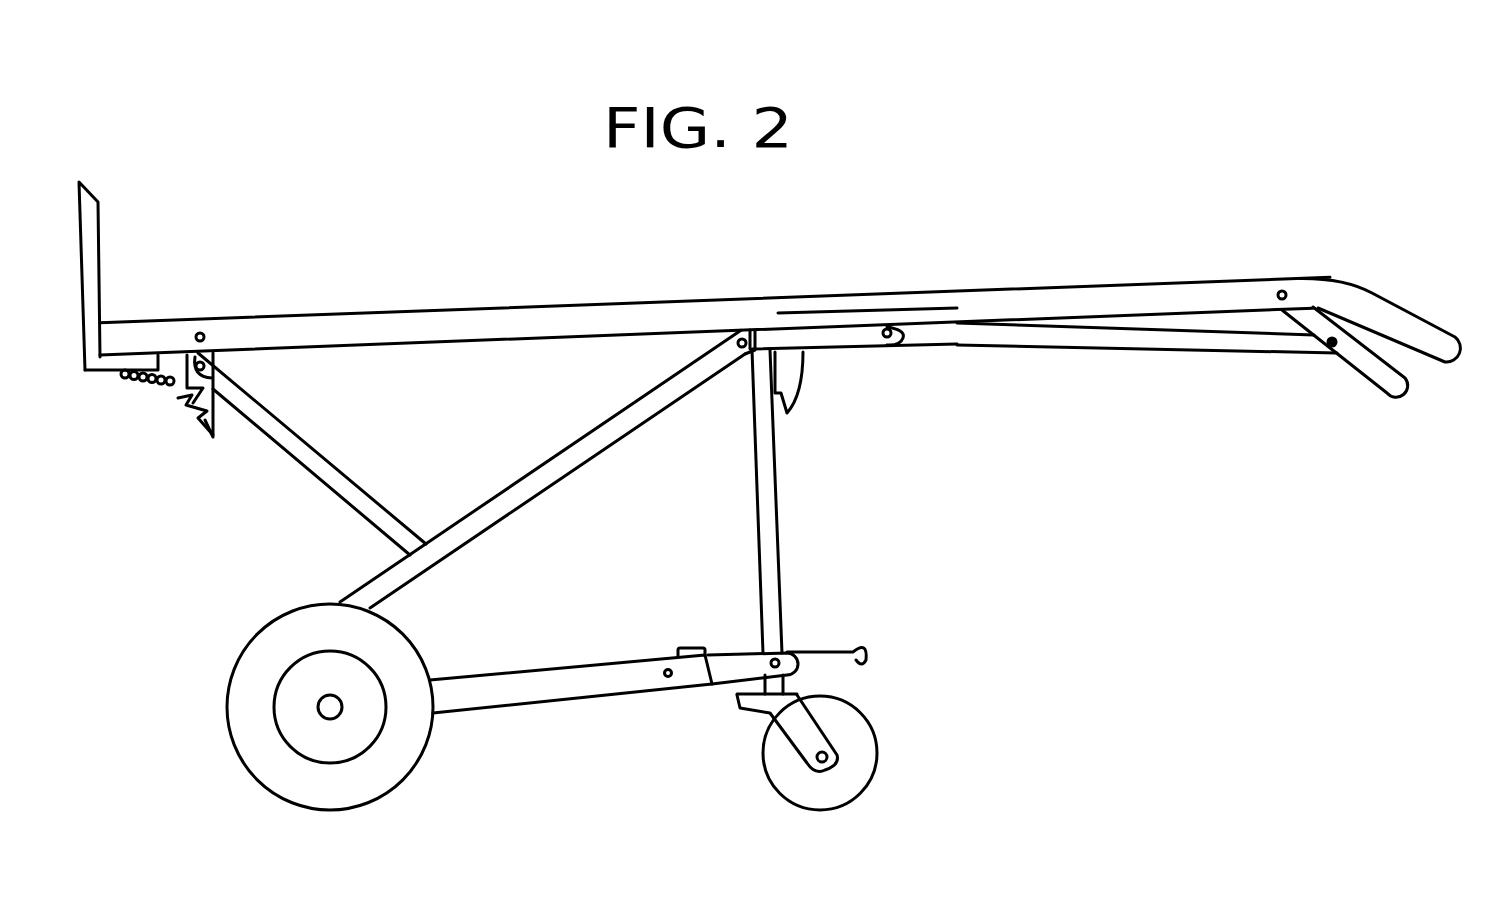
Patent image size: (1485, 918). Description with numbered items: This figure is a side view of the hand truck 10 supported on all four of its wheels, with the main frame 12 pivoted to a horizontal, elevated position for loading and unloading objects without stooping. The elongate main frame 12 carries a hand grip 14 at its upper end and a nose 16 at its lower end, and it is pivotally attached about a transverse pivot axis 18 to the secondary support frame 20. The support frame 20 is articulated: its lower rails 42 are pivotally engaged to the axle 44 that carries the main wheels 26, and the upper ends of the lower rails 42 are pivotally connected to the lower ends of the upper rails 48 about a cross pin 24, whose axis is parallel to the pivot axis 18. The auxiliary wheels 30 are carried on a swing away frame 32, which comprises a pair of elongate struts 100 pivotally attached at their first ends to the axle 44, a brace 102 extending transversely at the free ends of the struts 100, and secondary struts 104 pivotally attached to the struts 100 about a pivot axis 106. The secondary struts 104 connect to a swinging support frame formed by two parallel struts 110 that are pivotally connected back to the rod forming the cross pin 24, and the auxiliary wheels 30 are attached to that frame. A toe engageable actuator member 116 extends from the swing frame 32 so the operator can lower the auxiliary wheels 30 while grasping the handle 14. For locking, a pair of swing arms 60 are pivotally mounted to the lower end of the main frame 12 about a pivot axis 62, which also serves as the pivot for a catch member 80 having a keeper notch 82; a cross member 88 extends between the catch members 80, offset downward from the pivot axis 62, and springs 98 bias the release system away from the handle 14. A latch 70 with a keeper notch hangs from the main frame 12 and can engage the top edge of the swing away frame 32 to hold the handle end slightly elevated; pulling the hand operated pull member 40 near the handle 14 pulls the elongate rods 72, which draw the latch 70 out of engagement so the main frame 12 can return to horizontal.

The hand truck 10 is at (517, 284).
The main frame 12 is at (393, 328).
The hand grip 14 is at (1423, 332).
The nose 16 is at (90, 252).
The pivot axis 18 is at (889, 328).
The support frame 20 is at (521, 478).
The cross pin 24 is at (738, 348).
The main wheels 26 is at (257, 745).
The auxiliary wheels 30 is at (860, 746).
The swing away frame 32 is at (778, 527).
The pull member 40 is at (1375, 375).
The lower rails 42 is at (608, 435).
The axle 44 is at (333, 717).
The upper rails 48 is at (837, 335).
The swing arms 60 is at (323, 462).
The pivot axis 62 is at (203, 333).
The latch 70 is at (792, 378).
The elongate rods 72 is at (1177, 340).
The catch member 80 is at (207, 430).
The keeper notch 82 is at (178, 398).
The cross member 88 is at (215, 380).
The springs 98 is at (152, 382).
The struts 100 is at (540, 688).
The brace 102 is at (692, 648).
The secondary struts 104 is at (735, 665).
The pivot axis 106 is at (668, 680).
The struts 110 is at (763, 493).
The actuator member 116 is at (855, 638).